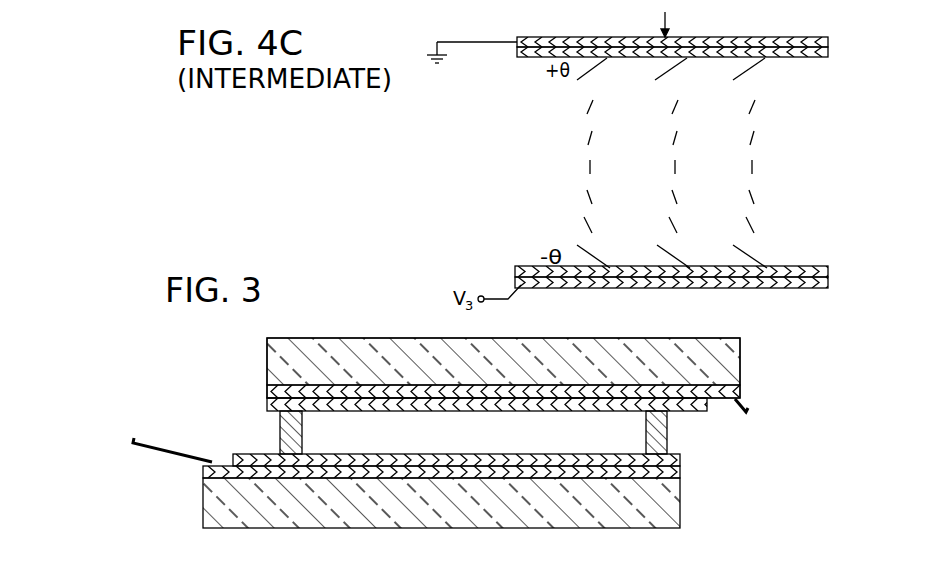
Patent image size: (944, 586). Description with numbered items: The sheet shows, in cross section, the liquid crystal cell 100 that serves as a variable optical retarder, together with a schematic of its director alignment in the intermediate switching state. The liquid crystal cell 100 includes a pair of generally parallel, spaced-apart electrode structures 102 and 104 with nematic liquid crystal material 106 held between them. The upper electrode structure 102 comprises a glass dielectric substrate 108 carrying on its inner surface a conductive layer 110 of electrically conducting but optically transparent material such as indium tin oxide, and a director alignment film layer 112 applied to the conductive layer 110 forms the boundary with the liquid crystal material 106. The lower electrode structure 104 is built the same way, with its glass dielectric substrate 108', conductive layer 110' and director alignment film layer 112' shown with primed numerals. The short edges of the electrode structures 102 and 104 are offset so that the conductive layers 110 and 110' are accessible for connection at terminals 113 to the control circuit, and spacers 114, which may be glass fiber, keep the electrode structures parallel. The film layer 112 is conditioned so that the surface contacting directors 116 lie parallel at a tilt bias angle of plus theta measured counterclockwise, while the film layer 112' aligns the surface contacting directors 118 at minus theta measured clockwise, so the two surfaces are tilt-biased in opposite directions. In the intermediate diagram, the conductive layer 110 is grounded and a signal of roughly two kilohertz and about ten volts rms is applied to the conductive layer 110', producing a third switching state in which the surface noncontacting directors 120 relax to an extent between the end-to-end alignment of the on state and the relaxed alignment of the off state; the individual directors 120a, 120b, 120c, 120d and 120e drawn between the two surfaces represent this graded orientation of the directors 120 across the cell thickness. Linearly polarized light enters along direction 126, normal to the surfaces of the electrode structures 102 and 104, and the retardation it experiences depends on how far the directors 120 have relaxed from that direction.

In FIG. 3, the liquid crystal cell 100 is at (192, 526).
In FIG. 3, the electrode structure 102 is at (258, 357).
In FIG. 3, the electrode structure 104 is at (390, 534).
In FIG. 3, the nematic liquid crystal material 106 is at (470, 438).
In FIG. 3, the glass dielectric substrate 108 is at (503, 348).
In FIG. 3, the glass dielectric substrate 108' is at (407, 503).
In FIG. 4C, the conductive layer 110 is at (661, 27).
In FIG. 3, the conductive layer 110 is at (472, 385).
In FIG. 4C, the conductive layer 110' is at (639, 273).
In FIG. 3, the conductive layer 110' is at (405, 468).
In FIG. 4C, the director alignment film layer 112 is at (659, 68).
In FIG. 3, the director alignment film layer 112 is at (456, 401).
In FIG. 4C, the director alignment film layer 112' is at (650, 253).
In FIG. 3, the director alignment film layer 112' is at (440, 441).
In FIG. 3, the terminals 113 is at (142, 440).
In FIG. 3, the spacers 114 is at (302, 432).
In FIG. 4C, the surface contacting directors 116 is at (601, 63).
In FIG. 4C, the surface contacting directors 118 is at (598, 262).
In FIG. 4C, the surface noncontacting directors 120 is at (560, 165).
In FIG. 4C, the molecules tilted +theta near upper surface 120a is at (592, 107).
In FIG. 4C, the molecules tilted slightly positive 120b is at (592, 138).
In FIG. 4C, the molecules tilted -theta near lower surface 120c is at (590, 225).
In FIG. 4C, the molecules tilted slightly negative 120d is at (590, 197).
In FIG. 4C, the molecules perpendicular to substrates 120e is at (590, 167).
In FIG. 4C, the direction of light propagation 126 is at (667, 12).